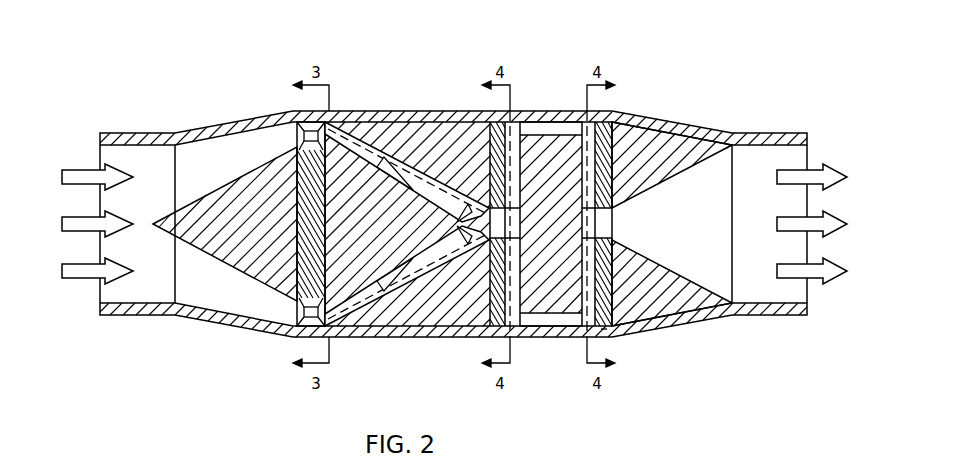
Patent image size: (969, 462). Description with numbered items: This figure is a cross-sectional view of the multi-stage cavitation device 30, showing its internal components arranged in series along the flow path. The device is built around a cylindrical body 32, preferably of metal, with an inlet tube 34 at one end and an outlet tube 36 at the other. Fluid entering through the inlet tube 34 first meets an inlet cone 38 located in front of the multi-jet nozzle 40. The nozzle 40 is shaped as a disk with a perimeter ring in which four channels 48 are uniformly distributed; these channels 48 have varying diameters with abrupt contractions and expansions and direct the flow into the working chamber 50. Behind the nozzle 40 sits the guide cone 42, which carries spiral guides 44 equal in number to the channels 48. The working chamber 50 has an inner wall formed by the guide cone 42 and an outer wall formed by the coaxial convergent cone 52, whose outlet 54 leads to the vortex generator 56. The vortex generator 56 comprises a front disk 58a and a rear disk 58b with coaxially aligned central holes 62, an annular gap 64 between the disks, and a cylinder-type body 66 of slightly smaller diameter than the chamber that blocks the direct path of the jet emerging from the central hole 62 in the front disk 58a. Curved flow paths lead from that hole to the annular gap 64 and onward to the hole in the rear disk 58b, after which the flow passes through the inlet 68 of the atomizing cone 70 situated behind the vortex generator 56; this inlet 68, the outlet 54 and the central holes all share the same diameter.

The cavitation device 30 is at (226, 102).
The cylindrical body 32 is at (388, 117).
The inlet tube 34 is at (152, 167).
The outlet tube 36 is at (755, 167).
The inlet cone 38 is at (212, 223).
The multi-jet nozzle 40 is at (305, 160).
The guide cone 42 is at (363, 220).
The spiral guides 44 is at (373, 273).
The channels 48 is at (301, 325).
The working chamber 50 is at (438, 193).
The convergent cone 52 is at (395, 305).
The outlet 54 is at (484, 236).
The vortex generator 56 is at (541, 376).
The front disk 58a is at (491, 237).
The rear disk 58b is at (606, 300).
The central hole 62 is at (493, 210).
The annular gap 64 is at (555, 125).
The cylinder-type body 66 is at (604, 331).
The inlet 68 is at (616, 243).
The atomizing cone 70 is at (693, 147).